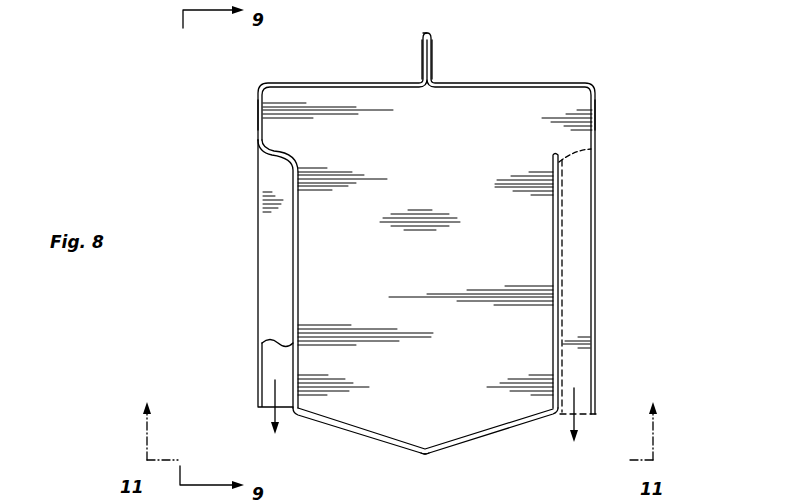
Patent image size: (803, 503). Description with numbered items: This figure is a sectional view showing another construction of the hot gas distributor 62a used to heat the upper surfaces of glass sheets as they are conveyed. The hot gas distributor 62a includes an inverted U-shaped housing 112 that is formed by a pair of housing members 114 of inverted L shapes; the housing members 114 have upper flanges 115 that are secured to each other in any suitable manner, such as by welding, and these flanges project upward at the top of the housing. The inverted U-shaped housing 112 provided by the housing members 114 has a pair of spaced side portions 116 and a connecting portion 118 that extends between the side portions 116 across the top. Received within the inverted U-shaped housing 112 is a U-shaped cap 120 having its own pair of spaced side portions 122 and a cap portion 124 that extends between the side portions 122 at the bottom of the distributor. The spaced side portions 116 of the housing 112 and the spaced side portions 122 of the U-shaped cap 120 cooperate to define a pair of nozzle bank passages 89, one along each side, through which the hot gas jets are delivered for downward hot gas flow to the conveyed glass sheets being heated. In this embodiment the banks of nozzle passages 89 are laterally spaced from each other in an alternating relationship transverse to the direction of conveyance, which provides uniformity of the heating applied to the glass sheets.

The hot gas distributor 62a is at (449, 253).
The nozzle passages 89 is at (270, 362).
The inverted U-shaped housing 112 is at (288, 74).
The housing members 114 is at (262, 126).
The upper flanges 115 is at (423, 42).
The side portions 116 is at (258, 321).
The connecting portion 118 is at (456, 84).
The U-shaped cap 120 is at (410, 462).
The side portions 122 is at (300, 266).
The cap portion 124 is at (383, 438).